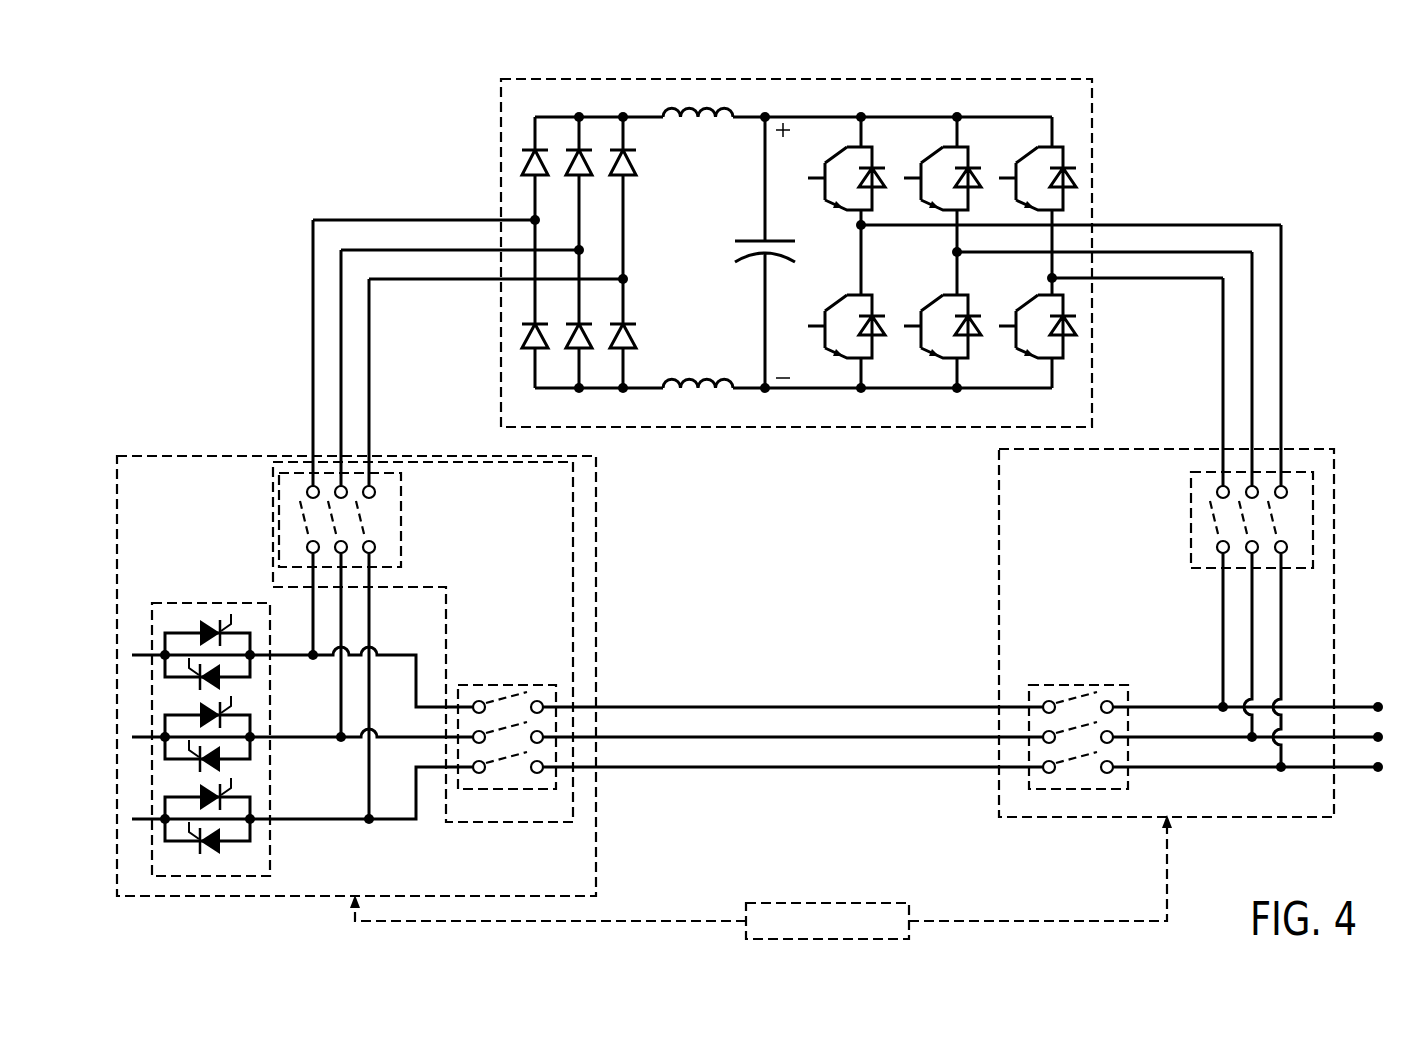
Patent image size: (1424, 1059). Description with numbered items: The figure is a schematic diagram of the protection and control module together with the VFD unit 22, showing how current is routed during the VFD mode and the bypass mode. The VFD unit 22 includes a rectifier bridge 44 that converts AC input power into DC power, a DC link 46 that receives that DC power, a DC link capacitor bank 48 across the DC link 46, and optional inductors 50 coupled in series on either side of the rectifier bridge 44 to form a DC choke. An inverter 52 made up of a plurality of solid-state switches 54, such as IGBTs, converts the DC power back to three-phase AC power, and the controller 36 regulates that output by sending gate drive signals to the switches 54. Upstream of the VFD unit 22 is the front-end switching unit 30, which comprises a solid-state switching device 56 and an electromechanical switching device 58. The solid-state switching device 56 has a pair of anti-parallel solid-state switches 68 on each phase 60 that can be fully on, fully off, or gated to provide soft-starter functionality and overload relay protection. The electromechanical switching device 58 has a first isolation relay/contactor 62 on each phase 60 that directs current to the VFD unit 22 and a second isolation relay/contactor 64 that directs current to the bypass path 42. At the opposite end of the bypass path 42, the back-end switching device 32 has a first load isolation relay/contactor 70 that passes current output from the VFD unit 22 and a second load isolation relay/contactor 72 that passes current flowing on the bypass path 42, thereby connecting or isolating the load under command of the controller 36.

The VFD unit 22 is at (1202, 151).
The front-end switching unit 30 is at (211, 438).
The back-end switching device 32 is at (1313, 402).
The controller 36 is at (845, 888).
The bypass path 42 is at (737, 682).
The rectifier bridge 44 is at (612, 98).
The DC link 46 is at (818, 394).
The DC link capacitor bank 48 is at (750, 262).
The inductors 50 is at (722, 122).
The inverter 52 is at (995, 104).
The solid-state switches 54 is at (873, 308).
The solid-state switching device 56 is at (166, 598).
The electromechanical switching device 58 is at (578, 533).
The phase 60 is at (138, 737).
The first isolation relay/contactor 62 is at (401, 520).
The second isolation relay/contactor 64 is at (500, 685).
The anti-parallel solid-state switches 68 is at (200, 626).
The first load isolation relay/contactor 70 is at (1313, 518).
The second load isolation relay/contactor 72 is at (1080, 685).